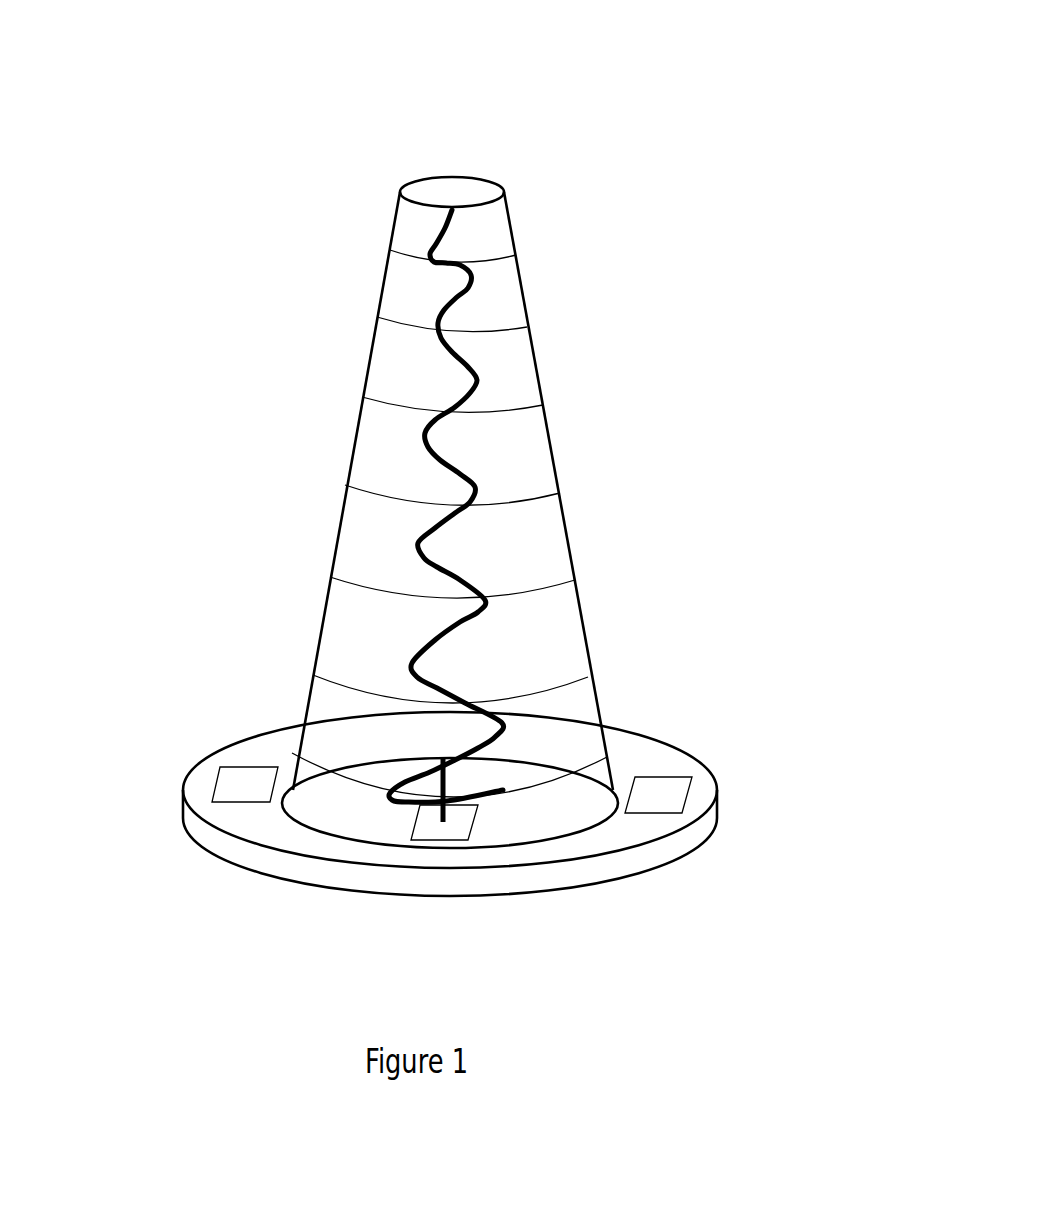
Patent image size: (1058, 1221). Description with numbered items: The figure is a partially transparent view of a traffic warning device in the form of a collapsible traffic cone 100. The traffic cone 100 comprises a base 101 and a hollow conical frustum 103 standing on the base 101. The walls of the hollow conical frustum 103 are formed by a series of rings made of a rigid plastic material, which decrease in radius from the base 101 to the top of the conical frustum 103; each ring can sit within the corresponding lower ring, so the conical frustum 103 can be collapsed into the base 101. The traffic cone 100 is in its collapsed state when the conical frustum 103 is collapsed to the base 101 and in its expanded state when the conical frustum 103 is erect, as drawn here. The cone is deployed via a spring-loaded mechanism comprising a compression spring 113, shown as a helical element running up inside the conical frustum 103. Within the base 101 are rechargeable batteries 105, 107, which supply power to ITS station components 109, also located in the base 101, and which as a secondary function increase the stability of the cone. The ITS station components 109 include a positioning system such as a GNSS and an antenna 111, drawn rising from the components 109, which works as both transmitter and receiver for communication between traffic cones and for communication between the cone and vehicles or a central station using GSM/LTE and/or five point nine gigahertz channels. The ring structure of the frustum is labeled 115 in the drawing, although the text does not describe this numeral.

The collapsible traffic cone 100 is at (464, 187).
The base 101 is at (335, 847).
The hollow conical frustum 103 is at (553, 445).
The rechargeable battery 105 is at (245, 783).
The rechargeable battery 107 is at (657, 793).
The ITS station components 109 is at (460, 822).
The antenna 111 is at (447, 782).
The compression spring 113 is at (438, 323).
The cone surface rings 115 is at (358, 540).